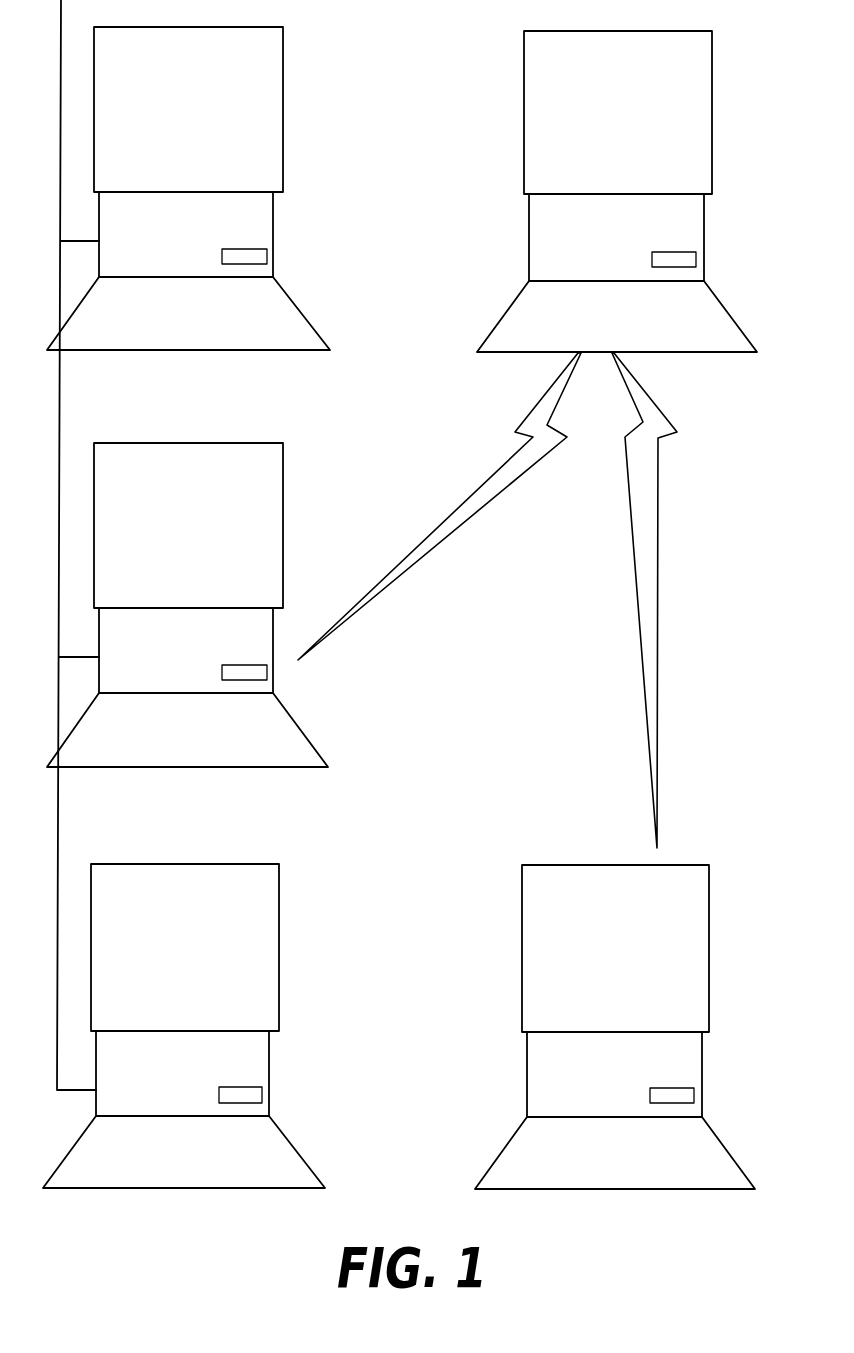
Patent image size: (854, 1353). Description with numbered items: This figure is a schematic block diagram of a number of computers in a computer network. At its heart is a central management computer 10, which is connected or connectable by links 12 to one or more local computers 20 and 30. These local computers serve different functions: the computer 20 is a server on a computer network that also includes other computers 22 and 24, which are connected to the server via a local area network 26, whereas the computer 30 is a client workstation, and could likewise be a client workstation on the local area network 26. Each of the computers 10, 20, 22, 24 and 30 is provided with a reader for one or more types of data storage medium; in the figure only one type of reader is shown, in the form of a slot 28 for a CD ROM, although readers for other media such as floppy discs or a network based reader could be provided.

The central management computer 10 is at (529, 231).
The links 12 is at (631, 507).
The local computer 20 is at (283, 484).
The computer 22 is at (273, 226).
The computer 24 is at (279, 933).
The local area network 26 is at (61, 404).
The slot 28 is at (247, 253).
The local computer 30 is at (527, 1067).